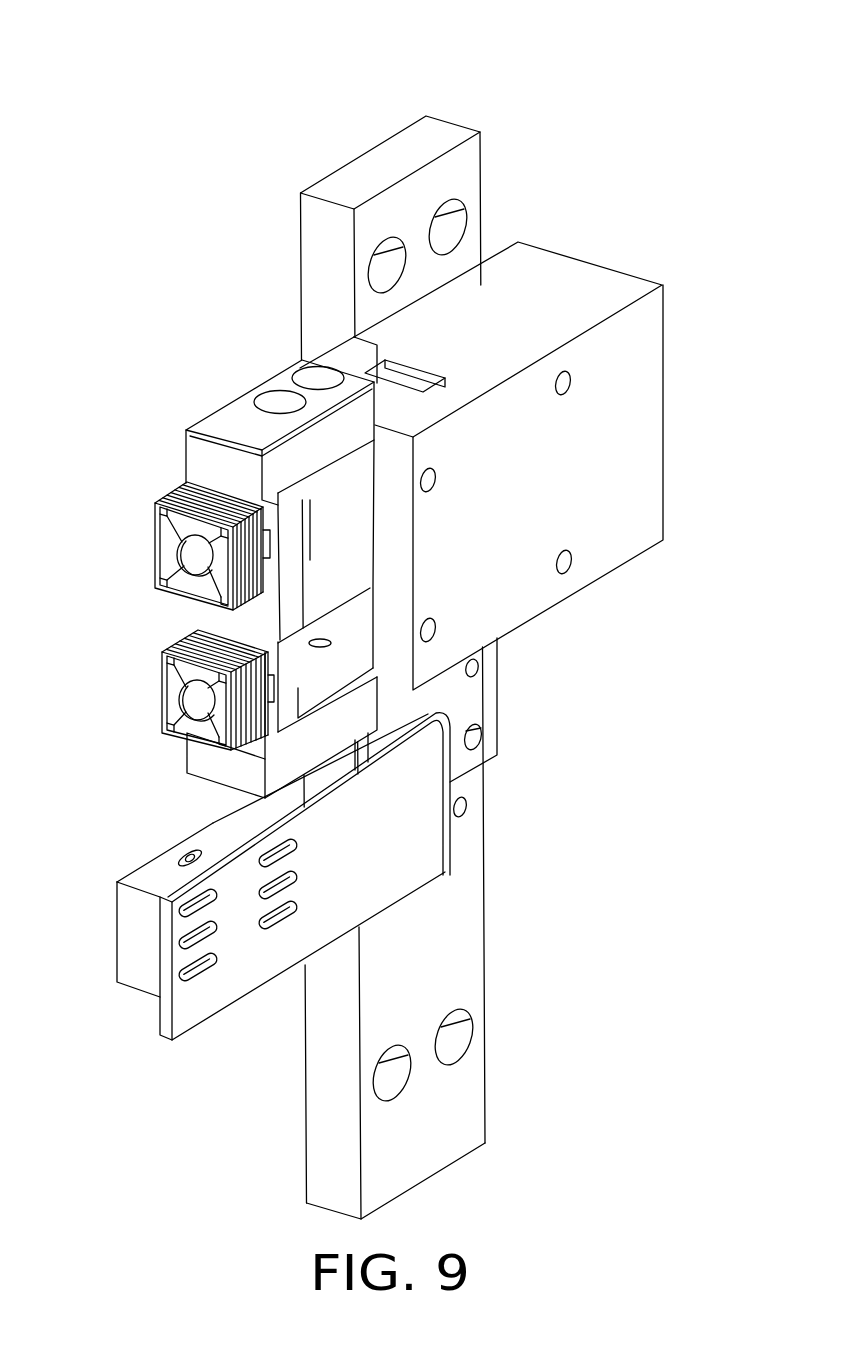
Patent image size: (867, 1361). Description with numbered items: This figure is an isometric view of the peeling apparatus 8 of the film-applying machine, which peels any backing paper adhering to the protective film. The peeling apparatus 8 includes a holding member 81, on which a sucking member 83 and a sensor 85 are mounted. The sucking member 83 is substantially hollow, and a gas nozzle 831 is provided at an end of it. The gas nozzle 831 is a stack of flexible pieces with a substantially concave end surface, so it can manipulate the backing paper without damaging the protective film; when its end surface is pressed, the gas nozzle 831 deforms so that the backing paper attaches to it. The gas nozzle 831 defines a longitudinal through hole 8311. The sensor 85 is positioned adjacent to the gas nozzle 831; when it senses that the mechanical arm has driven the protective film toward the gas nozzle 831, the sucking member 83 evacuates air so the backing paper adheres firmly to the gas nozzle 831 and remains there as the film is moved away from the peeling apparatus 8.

The peeling apparatus 8 is at (280, 83).
The holding member 81 is at (460, 940).
The sucking member 83 is at (527, 597).
The gas nozzle 831 is at (165, 540).
The longitudinal through hole 8311 is at (187, 551).
The sensor 85 is at (155, 868).